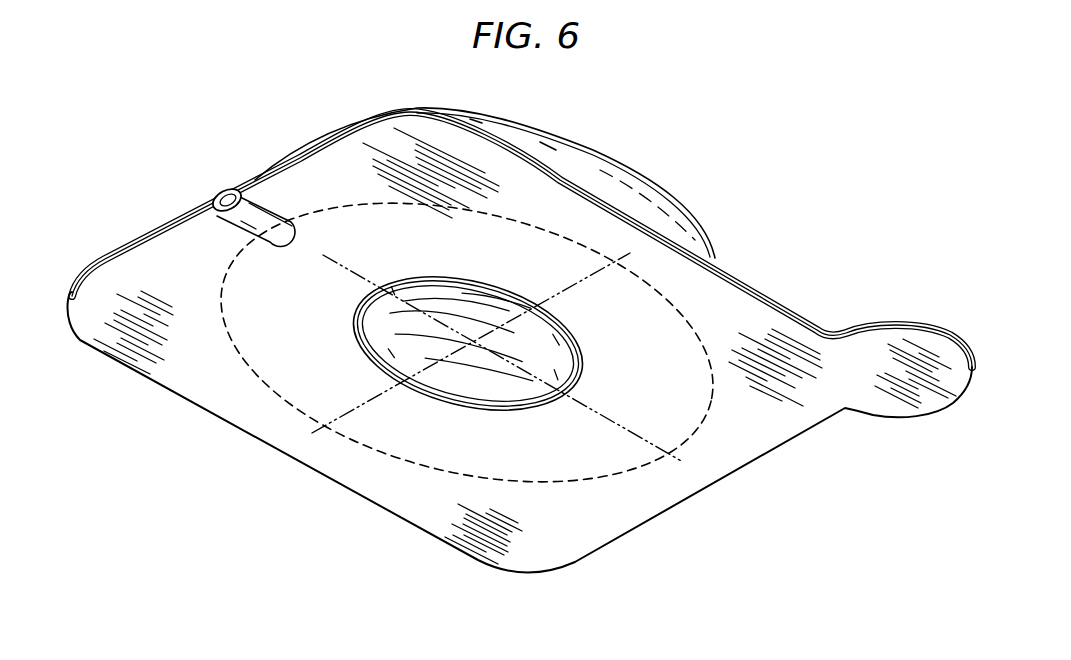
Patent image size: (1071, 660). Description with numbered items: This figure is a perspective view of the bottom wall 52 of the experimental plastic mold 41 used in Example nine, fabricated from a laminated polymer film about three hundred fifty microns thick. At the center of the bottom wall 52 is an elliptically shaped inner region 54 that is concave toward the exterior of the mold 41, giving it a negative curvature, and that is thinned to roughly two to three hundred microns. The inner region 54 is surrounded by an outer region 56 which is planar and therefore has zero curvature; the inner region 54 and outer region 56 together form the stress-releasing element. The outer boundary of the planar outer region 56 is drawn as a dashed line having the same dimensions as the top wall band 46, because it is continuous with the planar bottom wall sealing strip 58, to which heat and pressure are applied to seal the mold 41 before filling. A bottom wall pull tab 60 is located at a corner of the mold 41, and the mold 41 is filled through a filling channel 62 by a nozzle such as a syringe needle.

The plastic mold 41 is at (833, 160).
The top wall band 46 is at (592, 165).
The bottom wall 52 is at (303, 483).
The inner region 54 is at (490, 394).
The outer region 56 is at (645, 361).
The bottom wall sealing strip 58 is at (415, 507).
The bottom wall pull tab 60 is at (890, 371).
The filling channel 62 is at (205, 182).